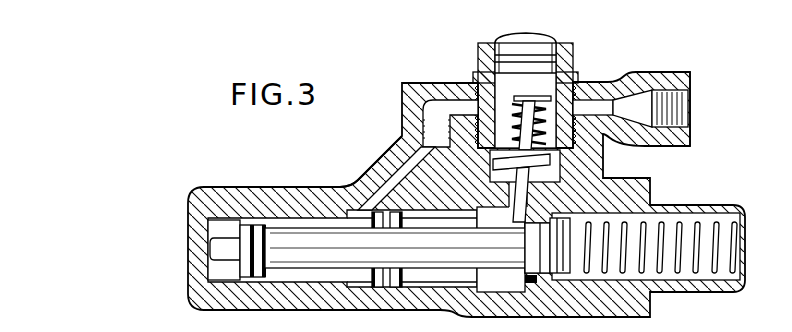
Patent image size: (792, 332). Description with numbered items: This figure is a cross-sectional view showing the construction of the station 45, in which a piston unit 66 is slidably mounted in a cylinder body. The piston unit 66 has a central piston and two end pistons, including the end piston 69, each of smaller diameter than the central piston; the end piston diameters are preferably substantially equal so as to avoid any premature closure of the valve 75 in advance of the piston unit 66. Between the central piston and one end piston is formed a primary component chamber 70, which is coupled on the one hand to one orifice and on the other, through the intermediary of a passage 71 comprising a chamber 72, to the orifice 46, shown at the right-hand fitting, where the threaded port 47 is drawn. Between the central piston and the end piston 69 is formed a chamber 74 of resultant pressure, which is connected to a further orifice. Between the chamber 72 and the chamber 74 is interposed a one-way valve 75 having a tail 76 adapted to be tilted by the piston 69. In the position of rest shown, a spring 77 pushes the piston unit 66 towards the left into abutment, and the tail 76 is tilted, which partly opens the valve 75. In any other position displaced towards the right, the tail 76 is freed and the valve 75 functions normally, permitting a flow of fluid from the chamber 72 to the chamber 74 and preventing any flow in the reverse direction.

The station 45 is at (195, 198).
The orifice 46 is at (692, 103).
The threaded inlet port 47 is at (692, 106).
The piston unit 66 is at (433, 228).
The end piston 69 is at (527, 284).
The primary component chamber 70 is at (367, 181).
The passage 71 is at (388, 158).
The chamber 72 is at (574, 80).
The chamber of resultant pressure 74 is at (446, 279).
The one-way valve 75 is at (553, 166).
The tail 76 is at (528, 203).
The spring 77 is at (712, 222).